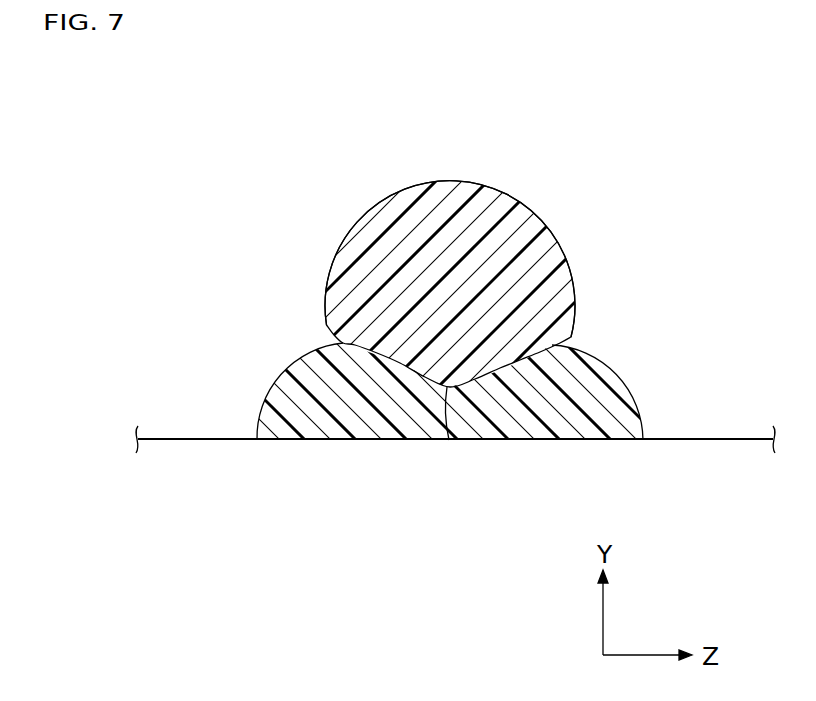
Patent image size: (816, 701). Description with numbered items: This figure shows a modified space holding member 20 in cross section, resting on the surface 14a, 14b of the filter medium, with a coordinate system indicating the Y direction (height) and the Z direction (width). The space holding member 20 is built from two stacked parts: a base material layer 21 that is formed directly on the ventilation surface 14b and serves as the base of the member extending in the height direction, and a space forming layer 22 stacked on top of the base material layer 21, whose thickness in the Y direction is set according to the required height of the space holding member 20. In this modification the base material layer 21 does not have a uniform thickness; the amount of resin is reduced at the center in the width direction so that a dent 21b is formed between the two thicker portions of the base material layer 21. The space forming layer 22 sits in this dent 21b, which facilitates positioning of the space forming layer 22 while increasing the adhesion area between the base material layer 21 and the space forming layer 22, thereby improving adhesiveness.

The electrode layer 14a is at (206, 438).
The ventilation surface 14b is at (206, 438).
The space holding member 20 is at (540, 209).
The space forming layer 22 is at (574, 287).
The base material layer 21 is at (613, 374).
The dent 21b is at (450, 440).